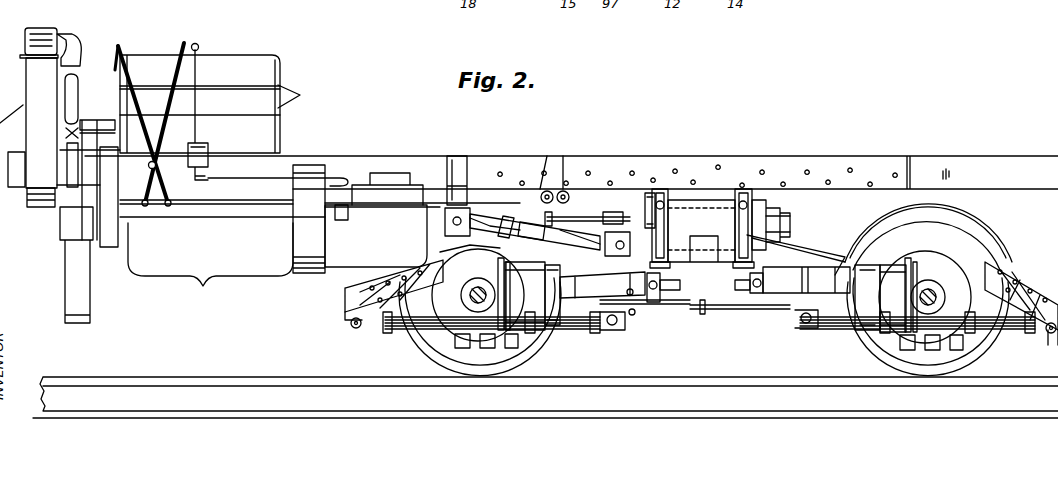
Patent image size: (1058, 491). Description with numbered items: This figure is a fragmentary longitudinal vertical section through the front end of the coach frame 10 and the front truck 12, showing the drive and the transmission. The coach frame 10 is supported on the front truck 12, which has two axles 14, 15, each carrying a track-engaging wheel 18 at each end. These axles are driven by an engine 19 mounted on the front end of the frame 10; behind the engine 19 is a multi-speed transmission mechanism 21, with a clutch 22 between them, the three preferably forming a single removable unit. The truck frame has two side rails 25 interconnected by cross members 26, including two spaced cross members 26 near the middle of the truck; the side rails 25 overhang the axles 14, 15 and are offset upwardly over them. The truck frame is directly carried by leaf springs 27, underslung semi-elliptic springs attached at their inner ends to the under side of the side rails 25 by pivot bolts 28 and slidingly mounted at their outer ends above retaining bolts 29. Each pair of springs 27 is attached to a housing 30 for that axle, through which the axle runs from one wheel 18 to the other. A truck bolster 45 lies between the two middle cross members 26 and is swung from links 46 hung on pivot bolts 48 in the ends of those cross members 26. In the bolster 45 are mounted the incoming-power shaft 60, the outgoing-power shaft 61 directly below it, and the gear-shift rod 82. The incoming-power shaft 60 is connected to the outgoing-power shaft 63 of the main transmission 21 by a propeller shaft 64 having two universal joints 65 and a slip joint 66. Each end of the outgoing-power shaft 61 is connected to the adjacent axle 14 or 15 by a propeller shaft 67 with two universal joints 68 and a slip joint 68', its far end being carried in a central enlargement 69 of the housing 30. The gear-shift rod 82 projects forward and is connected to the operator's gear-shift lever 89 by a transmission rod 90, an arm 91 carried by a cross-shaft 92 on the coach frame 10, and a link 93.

The coach frame 10 is at (952, 162).
The front truck 12 is at (672, 308).
The axle 14 is at (455, 298).
The axle 15 is at (890, 320).
The track-engaging wheel 18 is at (487, 378).
The engine 19 is at (248, 62).
The multi-speed transmission mechanism 21 is at (380, 220).
The clutch 22 is at (300, 278).
The side rail 25 is at (995, 262).
The cross member 26 is at (662, 190).
The leaf spring 27 is at (388, 318).
The pivot bolt 28 is at (613, 327).
The retaining bolt 29 is at (350, 326).
The axle housing 30 is at (470, 305).
The truck bolster 45 is at (715, 227).
The link 46 is at (676, 226).
The pivot bolt 48 is at (782, 220).
The incoming-power shaft 60 is at (800, 244).
The outgoing-power shaft 61 is at (742, 312).
The outgoing-power shaft of the main transmission 63 is at (450, 165).
The propeller shaft 64 is at (568, 244).
The universal joint 65 is at (463, 199).
The slip joint 66 is at (490, 212).
The propeller shaft 67 is at (600, 328).
The universal joint 68 is at (709, 304).
The slip joint 68' is at (700, 325).
The central enlargement 69 is at (506, 268).
The gear-shift rod 82 is at (651, 190).
The gear-shift lever 89 is at (178, 48).
The transmission rod 90 is at (565, 200).
The arm 91 is at (598, 198).
The cross-shaft 92 is at (548, 190).
The link 93 is at (258, 205).